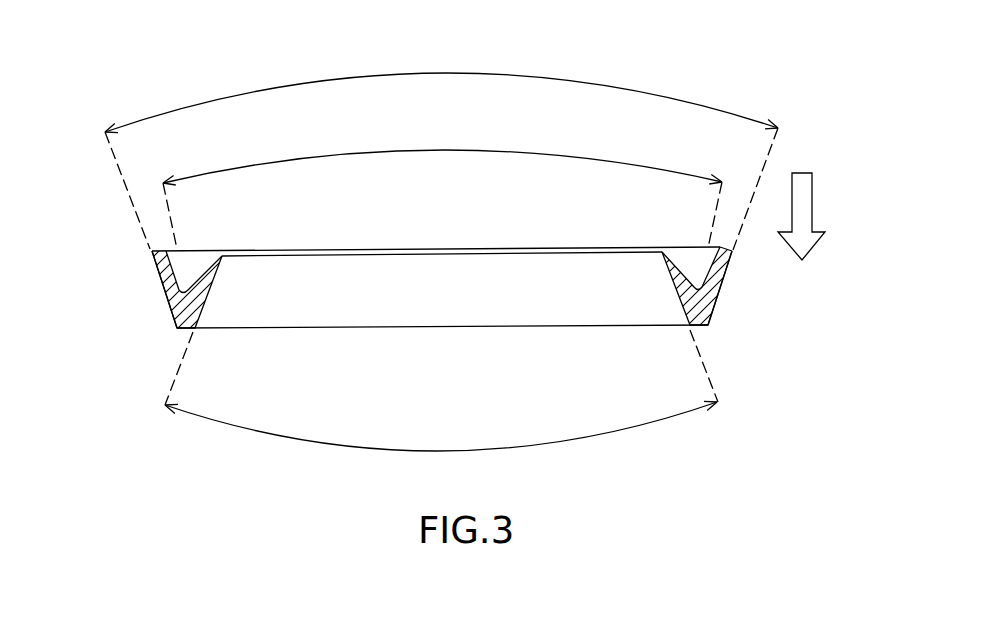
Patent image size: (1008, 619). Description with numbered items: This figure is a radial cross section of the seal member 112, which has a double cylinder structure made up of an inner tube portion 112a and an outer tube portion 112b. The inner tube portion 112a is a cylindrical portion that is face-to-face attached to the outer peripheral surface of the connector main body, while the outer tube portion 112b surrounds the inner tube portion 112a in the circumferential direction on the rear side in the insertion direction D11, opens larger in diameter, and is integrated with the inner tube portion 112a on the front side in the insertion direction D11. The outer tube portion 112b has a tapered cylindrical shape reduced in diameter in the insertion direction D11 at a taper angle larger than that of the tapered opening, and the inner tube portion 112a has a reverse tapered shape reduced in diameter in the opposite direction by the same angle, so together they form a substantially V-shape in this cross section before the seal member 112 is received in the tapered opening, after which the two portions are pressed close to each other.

The seal member 112 is at (160, 300).
The inner tube portion 112a is at (243, 228).
The outer tube portion 112b is at (165, 272).
The insertion direction D11 is at (812, 200).